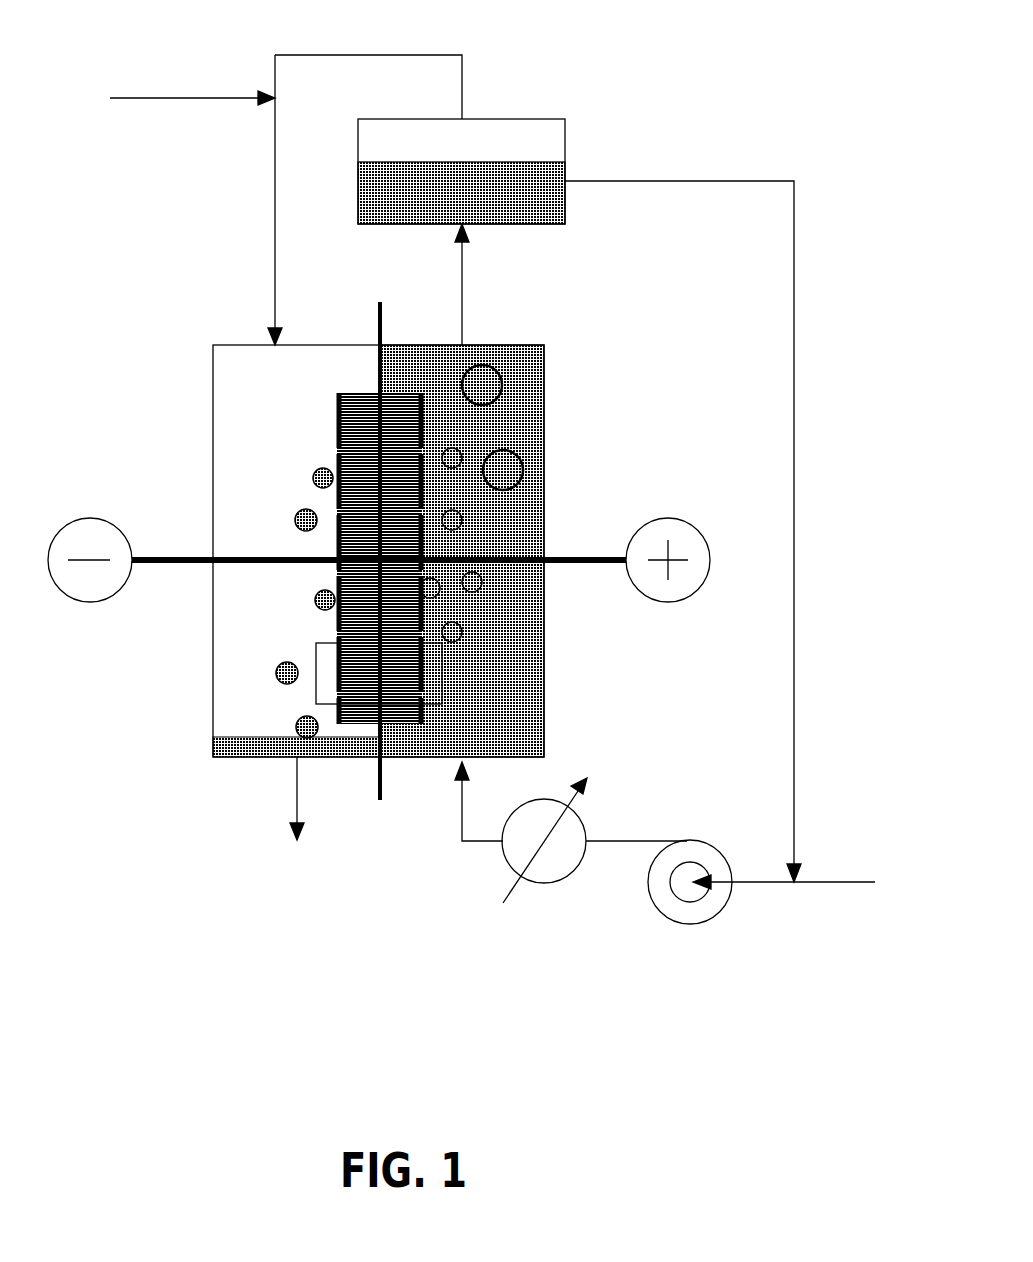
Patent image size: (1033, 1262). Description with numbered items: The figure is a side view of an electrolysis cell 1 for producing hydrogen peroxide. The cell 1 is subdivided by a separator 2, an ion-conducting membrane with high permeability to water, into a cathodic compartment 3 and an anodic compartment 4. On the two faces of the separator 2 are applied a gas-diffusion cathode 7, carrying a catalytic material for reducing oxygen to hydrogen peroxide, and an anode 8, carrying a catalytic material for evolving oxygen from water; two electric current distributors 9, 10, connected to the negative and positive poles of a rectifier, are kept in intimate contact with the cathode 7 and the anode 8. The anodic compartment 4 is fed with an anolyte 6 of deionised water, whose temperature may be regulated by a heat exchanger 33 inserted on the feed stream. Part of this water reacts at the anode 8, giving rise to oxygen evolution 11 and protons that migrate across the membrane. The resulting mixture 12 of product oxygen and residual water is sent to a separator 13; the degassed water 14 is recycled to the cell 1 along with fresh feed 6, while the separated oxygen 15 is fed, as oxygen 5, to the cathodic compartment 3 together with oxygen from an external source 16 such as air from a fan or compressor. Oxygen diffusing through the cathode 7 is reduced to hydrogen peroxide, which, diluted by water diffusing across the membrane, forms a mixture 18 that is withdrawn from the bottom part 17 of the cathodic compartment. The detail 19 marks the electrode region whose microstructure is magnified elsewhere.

The cell 1 is at (193, 437).
The separator 2 is at (377, 800).
The cathodic compartment 3 is at (233, 592).
The anodic compartment 4 is at (525, 592).
The oxygen 5 is at (275, 243).
The anolyte 6 is at (813, 890).
The gas-diffusion cathode 7 is at (357, 518).
The anode 8 is at (402, 518).
The electric current distributor 9 is at (336, 430).
The electric current distributor 10 is at (423, 428).
The oxygen evolution 11 is at (500, 382).
The mixture 12 is at (462, 278).
The separator 13 is at (565, 119).
The degassed water 14 is at (647, 181).
The separated oxygen 15 is at (462, 75).
The external source 16 is at (212, 95).
The bottom part 17 is at (295, 792).
The mixture 18 is at (273, 675).
The detail 19 is at (443, 683).
The heat exchanger 33 is at (565, 882).